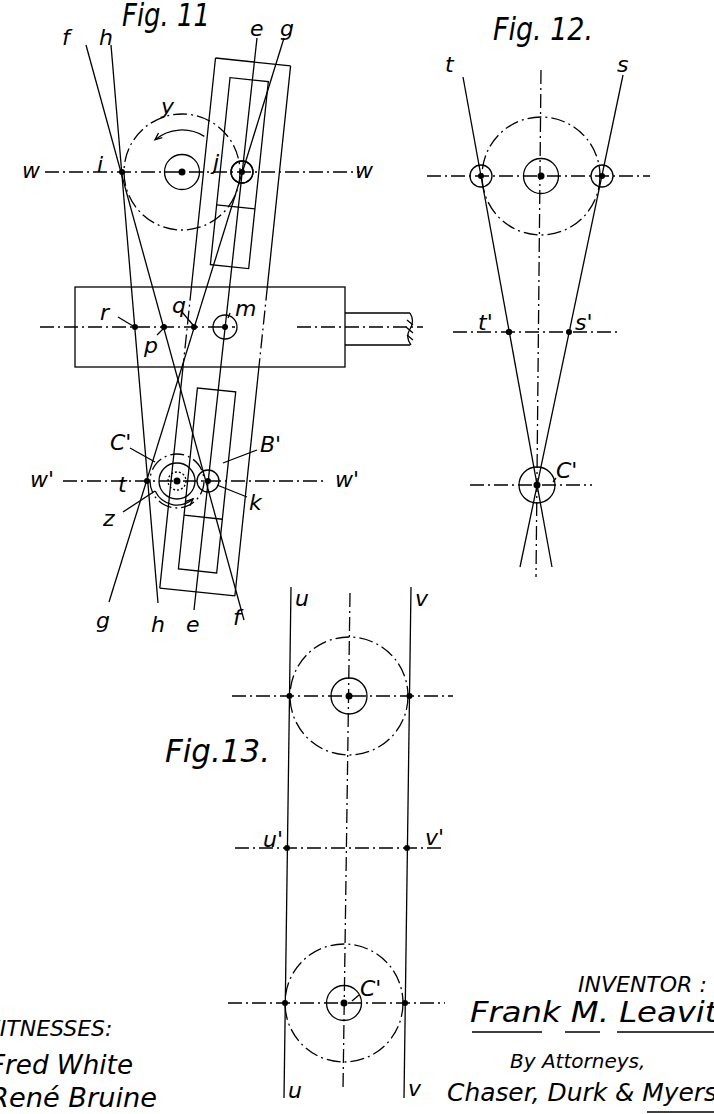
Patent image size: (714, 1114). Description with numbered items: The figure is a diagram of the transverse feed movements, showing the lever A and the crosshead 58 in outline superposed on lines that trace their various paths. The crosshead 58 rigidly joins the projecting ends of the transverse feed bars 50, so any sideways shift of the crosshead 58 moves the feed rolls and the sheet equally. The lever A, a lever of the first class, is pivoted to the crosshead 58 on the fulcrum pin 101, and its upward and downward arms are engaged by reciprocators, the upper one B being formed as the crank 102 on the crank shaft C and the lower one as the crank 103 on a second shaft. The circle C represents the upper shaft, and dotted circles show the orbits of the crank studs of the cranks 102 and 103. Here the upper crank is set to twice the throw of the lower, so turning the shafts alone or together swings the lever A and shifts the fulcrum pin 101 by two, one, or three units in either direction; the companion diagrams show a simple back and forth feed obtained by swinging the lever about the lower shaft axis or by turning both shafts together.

In FIG. 11, the transverse feed bar 50 is at (380, 320).
In FIG. 11, the crosshead 58 is at (92, 358).
In FIG. 11, the fulcrum pin 101 is at (227, 334).
In FIG. 12, the fulcrum pin 101 is at (507, 335).
In FIG. 13, the fulcrum pin 101 is at (306, 860).
In FIG. 11, the crank 102 is at (255, 182).
In FIG. 11, the crank 103 is at (217, 478).
In FIG. 11, the lever A is at (285, 108).
In FIG. 11, the reciprocator B is at (257, 162).
In FIG. 11, the crank shaft C is at (182, 172).
In FIG. 12, the crank shaft C is at (533, 166).
In FIG. 13, the crank shaft C is at (354, 690).